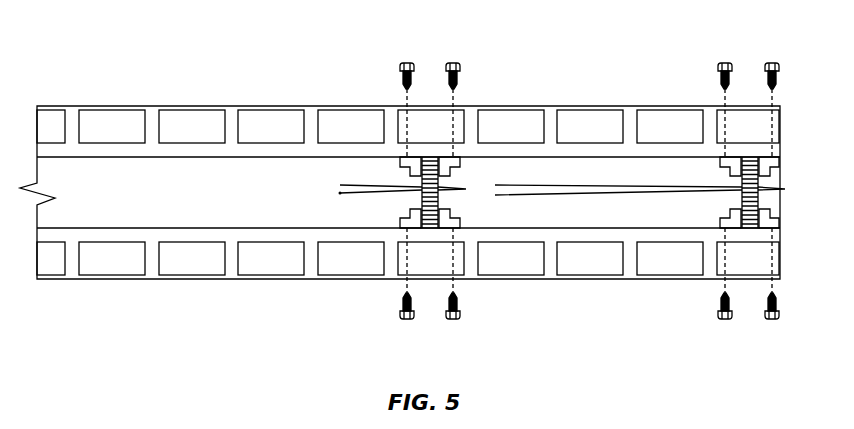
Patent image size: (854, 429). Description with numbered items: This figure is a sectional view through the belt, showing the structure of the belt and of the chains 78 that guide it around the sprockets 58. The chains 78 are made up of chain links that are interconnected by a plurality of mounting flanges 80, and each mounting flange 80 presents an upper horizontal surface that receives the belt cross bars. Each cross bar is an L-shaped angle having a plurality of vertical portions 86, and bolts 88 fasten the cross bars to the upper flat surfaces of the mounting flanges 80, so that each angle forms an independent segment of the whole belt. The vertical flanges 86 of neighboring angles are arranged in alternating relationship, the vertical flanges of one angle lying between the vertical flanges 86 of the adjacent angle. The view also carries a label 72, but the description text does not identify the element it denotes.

The sprocket 58 is at (345, 185).
The beam 72 is at (680, 102).
The chain 78 is at (440, 171).
The mounting flange 80 is at (401, 158).
The vertical portion 86 is at (543, 113).
The bolt 88 is at (452, 61).